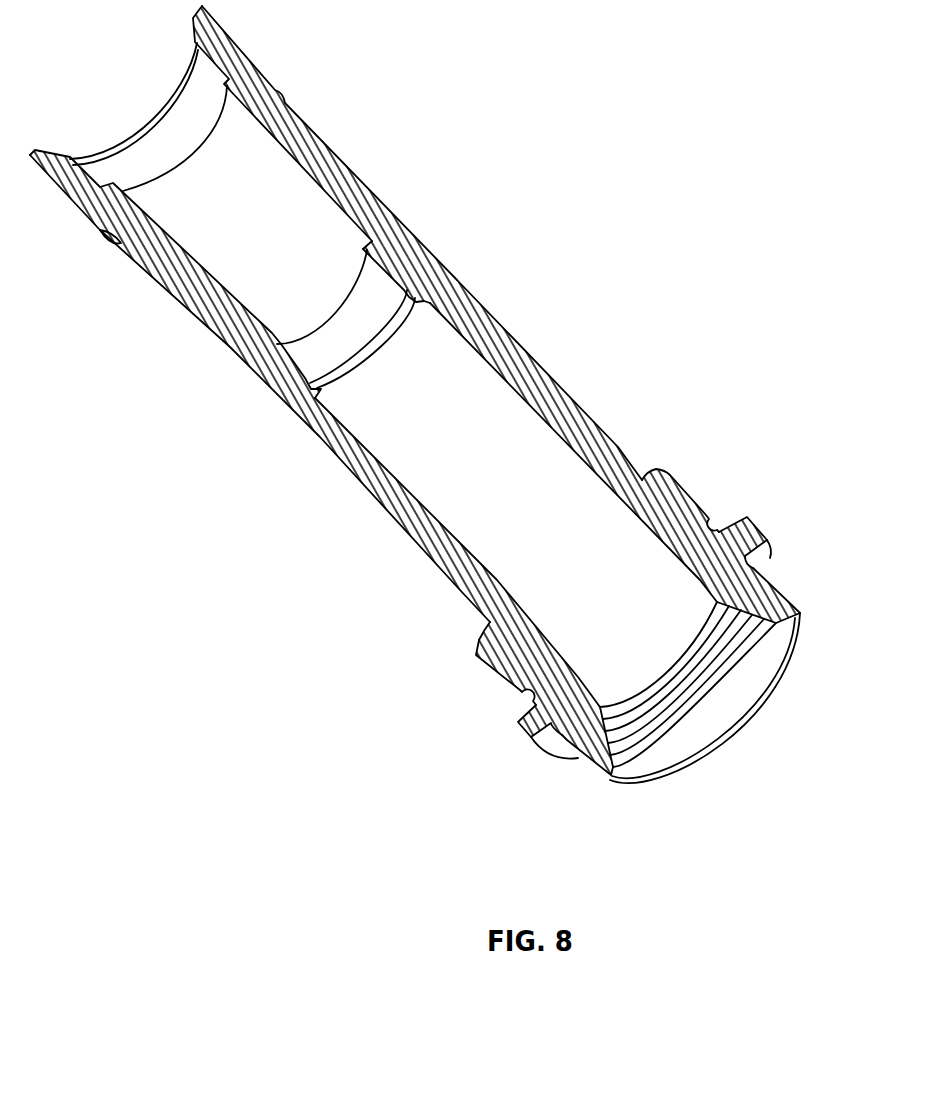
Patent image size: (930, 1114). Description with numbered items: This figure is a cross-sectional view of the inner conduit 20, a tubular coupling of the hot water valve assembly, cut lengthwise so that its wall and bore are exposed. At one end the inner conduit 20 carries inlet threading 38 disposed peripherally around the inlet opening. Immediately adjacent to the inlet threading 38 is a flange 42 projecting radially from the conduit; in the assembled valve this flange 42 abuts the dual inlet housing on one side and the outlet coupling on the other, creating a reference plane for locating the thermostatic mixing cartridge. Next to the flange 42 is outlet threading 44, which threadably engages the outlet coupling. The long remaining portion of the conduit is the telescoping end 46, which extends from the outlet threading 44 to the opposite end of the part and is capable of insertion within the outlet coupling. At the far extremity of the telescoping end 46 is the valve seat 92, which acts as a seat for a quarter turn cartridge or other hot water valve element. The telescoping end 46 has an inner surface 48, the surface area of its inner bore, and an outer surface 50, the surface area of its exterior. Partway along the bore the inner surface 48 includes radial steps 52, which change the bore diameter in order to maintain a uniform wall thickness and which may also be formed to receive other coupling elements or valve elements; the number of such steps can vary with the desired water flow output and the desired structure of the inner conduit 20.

The inner conduit 20 is at (518, 727).
The inlet threading 38 is at (783, 590).
The flange 42 is at (763, 547).
The outlet threading 44 is at (687, 483).
The telescoping end 46 is at (340, 150).
The inner surface 48 is at (472, 372).
The outer surface 50 is at (360, 487).
The radial steps 52 is at (360, 277).
The valve seat 92 is at (105, 140).